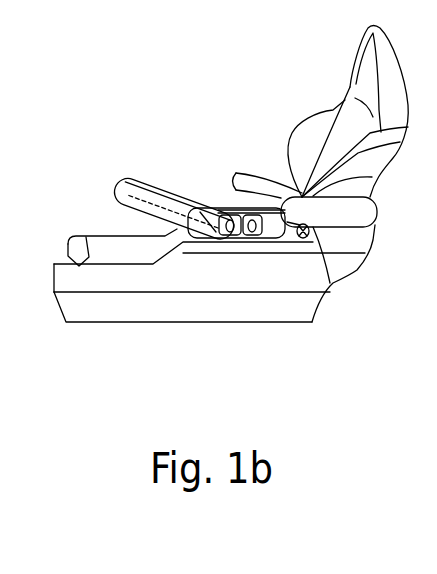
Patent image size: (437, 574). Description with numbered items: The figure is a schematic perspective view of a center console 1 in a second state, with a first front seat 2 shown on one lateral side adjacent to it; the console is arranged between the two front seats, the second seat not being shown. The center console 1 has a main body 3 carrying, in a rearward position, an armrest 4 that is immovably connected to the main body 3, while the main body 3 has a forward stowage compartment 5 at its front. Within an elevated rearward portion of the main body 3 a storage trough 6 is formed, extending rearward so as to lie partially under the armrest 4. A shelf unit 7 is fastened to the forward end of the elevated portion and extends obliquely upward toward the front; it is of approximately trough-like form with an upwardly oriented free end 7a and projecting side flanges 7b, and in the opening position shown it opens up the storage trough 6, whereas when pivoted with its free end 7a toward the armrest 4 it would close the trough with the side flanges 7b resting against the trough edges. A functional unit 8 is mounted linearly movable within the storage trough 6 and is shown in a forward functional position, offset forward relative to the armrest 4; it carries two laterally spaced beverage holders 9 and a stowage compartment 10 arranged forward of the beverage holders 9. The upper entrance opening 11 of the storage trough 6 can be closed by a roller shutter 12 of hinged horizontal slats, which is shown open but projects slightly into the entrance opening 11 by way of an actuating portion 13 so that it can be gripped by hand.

The center console 1 is at (158, 323).
The first front seat 2 is at (362, 83).
The main body 3 is at (115, 307).
The armrest 4 is at (340, 213).
The forward stowage compartment 5 is at (105, 250).
The storage trough 6 is at (207, 218).
The shelf unit 7 is at (150, 193).
The free end 7a is at (128, 178).
The projecting side flanges 7b is at (190, 200).
The functional unit 8 is at (232, 207).
The beverage holders 9 is at (238, 190).
The stowage compartment 10 is at (228, 240).
The entrance opening 11 is at (263, 207).
The roller shutter 12 is at (301, 242).
The actuating portion 13 is at (330, 283).